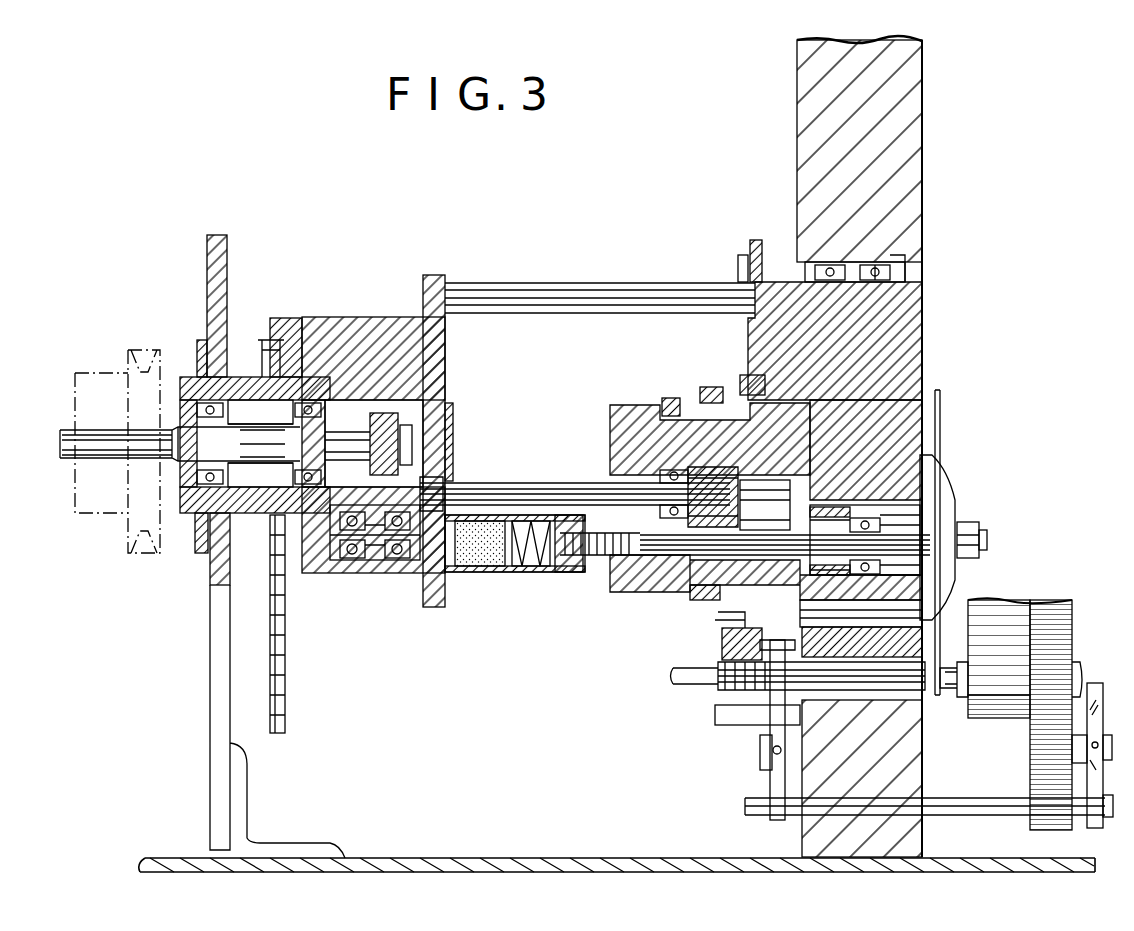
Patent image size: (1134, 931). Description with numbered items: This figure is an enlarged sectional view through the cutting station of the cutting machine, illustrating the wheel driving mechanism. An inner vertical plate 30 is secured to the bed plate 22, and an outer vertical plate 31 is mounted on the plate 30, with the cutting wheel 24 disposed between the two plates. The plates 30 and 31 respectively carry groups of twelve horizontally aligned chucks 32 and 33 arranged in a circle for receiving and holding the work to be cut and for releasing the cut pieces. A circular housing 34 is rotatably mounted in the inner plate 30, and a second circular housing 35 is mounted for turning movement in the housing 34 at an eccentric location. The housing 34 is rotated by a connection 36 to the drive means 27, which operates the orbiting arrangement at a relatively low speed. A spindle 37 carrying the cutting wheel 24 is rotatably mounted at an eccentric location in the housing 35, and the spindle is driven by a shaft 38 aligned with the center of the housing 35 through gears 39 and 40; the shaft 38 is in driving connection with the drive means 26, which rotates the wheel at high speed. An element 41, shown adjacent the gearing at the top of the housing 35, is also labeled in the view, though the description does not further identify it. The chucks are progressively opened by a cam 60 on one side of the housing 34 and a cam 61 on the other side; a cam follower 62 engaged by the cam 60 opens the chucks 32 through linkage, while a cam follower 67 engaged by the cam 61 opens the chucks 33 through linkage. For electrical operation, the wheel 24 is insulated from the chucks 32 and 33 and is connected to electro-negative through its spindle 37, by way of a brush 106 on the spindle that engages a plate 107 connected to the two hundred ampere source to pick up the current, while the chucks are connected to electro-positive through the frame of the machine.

The bed plate 22 is at (572, 858).
The cutting wheel 24 is at (945, 440).
The drive means 26 is at (90, 376).
The drive means 27 is at (289, 648).
The inner vertical plate 30 is at (895, 130).
The outer vertical plate 31 is at (1038, 603).
The chucks 32 is at (924, 692).
The chucks 33 is at (958, 697).
The circular housing 34 is at (905, 322).
The circular housing 35 is at (606, 430).
The connection 36 is at (545, 290).
The spindle 37 is at (915, 530).
The shaft 38 is at (535, 493).
The gear 39 is at (695, 600).
The gear 40 is at (697, 468).
The screw 41 is at (665, 398).
The cam 60 is at (738, 256).
The cam 61 is at (766, 240).
The cam follower 62 is at (708, 630).
The cam follower 67 is at (760, 744).
The brush 106 is at (486, 566).
The plate 107 is at (449, 425).